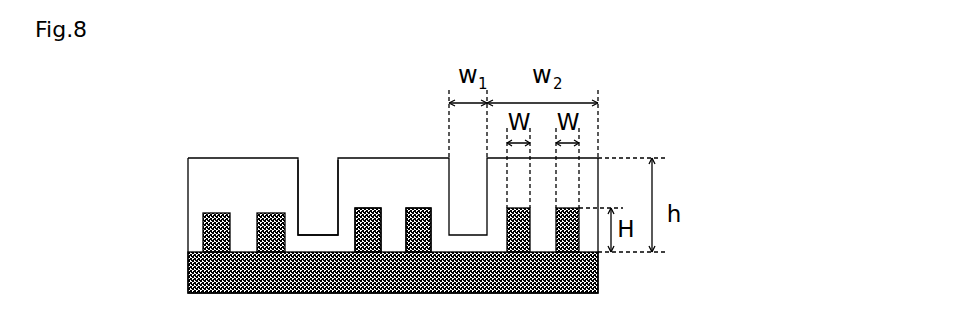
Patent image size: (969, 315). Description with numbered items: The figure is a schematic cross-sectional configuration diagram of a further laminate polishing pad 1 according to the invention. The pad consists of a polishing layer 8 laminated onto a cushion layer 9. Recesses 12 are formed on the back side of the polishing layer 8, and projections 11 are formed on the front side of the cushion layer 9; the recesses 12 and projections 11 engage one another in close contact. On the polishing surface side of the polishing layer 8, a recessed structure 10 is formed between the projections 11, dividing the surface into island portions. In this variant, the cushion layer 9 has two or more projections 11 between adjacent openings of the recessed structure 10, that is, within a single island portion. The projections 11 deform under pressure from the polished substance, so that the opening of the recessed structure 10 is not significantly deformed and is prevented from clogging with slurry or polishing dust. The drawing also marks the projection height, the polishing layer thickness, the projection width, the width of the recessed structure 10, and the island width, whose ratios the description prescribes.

The laminate polishing pad 1 is at (215, 147).
The polishing layer 8 is at (222, 198).
The cushion layer 9 is at (188, 268).
The recessed structure 10 is at (313, 212).
The projection 11 is at (408, 208).
The recess 12 is at (418, 208).